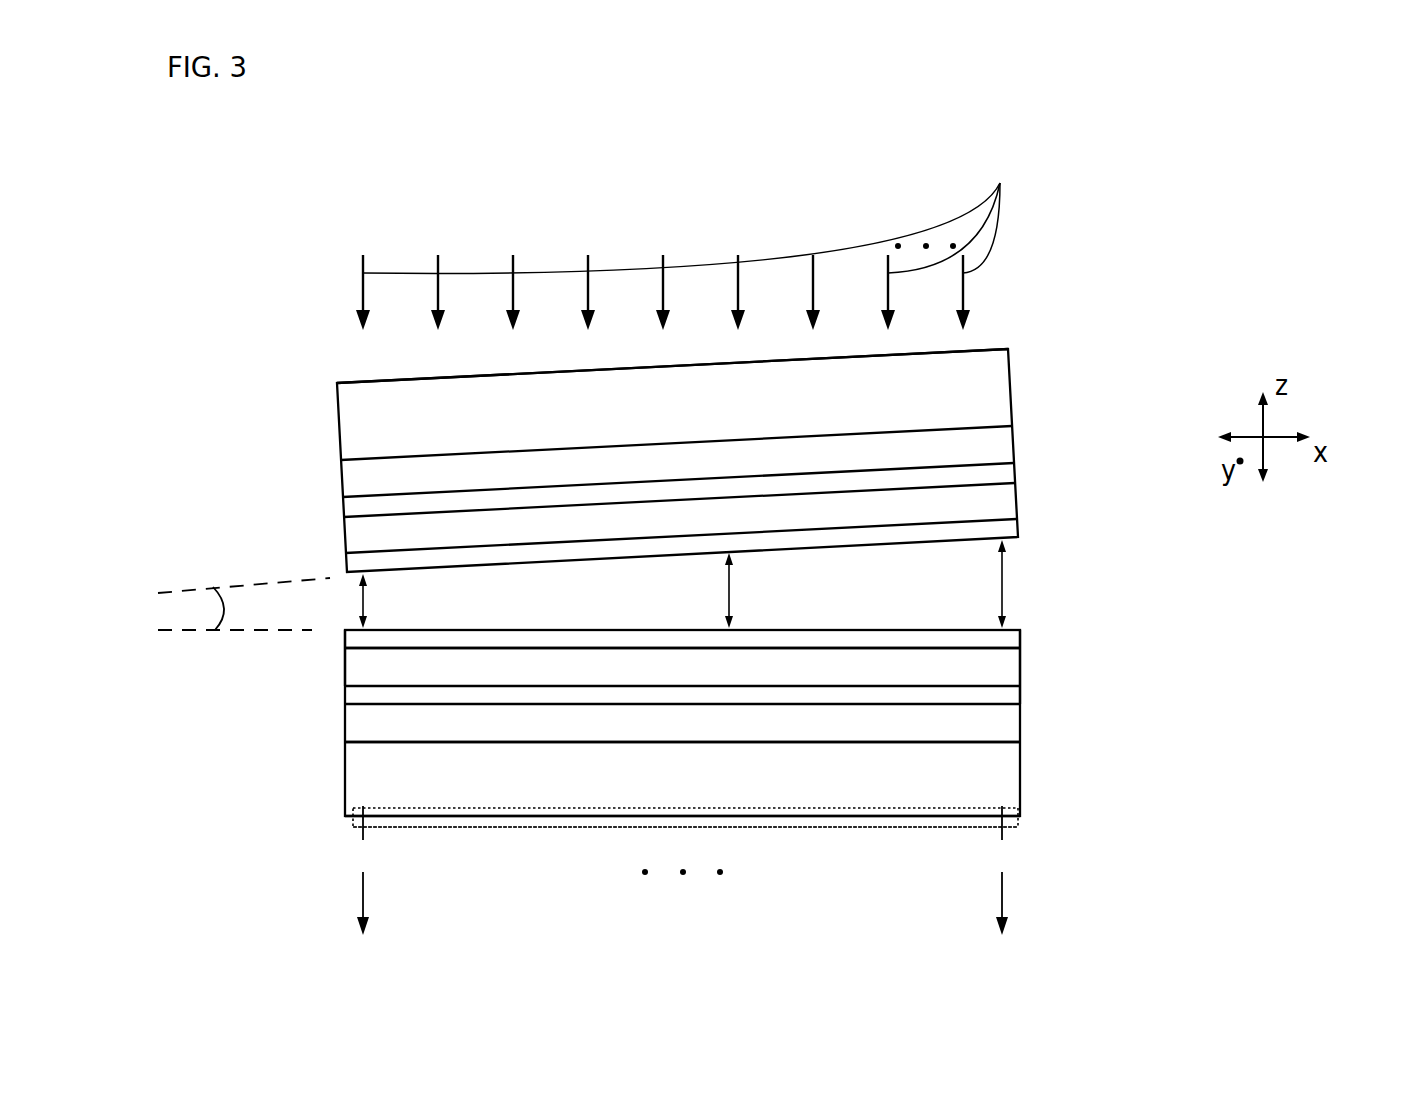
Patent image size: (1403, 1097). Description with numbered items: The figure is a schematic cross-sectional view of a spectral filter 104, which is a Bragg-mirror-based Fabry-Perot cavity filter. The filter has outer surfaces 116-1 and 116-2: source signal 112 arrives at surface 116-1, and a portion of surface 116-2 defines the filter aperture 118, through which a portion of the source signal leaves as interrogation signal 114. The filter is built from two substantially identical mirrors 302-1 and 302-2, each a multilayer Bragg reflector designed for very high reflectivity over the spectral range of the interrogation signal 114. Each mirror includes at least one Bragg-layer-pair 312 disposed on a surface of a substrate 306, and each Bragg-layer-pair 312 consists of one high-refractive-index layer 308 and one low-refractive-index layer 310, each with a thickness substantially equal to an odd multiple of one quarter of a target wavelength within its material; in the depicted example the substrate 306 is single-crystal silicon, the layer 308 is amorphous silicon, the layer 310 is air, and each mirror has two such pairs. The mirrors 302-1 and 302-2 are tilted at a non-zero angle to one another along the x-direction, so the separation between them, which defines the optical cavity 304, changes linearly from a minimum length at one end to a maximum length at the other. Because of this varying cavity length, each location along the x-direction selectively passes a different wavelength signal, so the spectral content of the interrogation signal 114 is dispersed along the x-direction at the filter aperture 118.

The source signal 112 is at (318, 250).
The spectral filter 104 is at (306, 412).
The outer surface 116-1 is at (668, 376).
The mirror 302-2 is at (805, 449).
The optical cavity 304 is at (682, 584).
The Bragg-layer-pair 312 is at (337, 630).
The low-refractive-index layer 310 is at (682, 695).
The high-refractive-index layer 308 is at (1003, 638).
The substrate 306 is at (682, 790).
The filter aperture 118 is at (706, 808).
The mirror 302-1 is at (769, 790).
The outer surface 116-2 is at (789, 832).
The interrogation signal 114 is at (1118, 910).